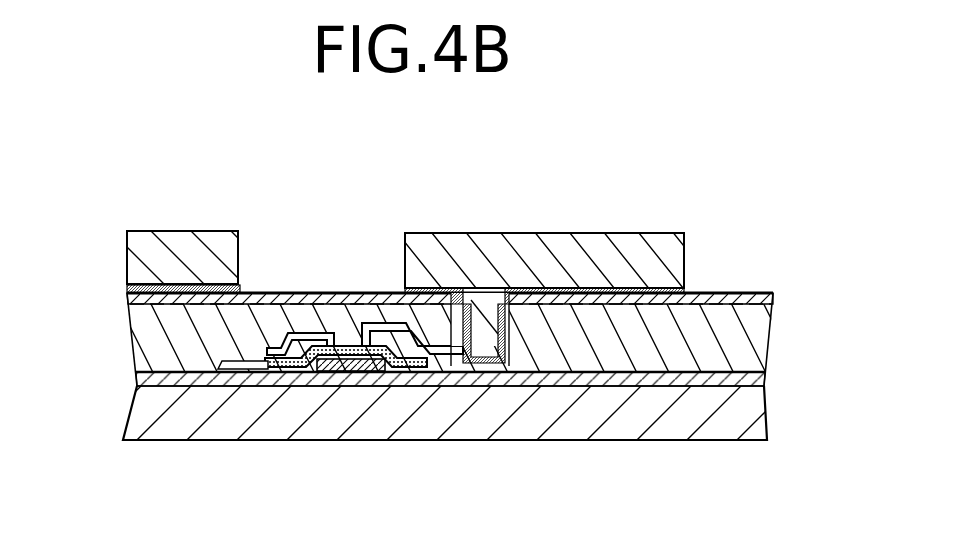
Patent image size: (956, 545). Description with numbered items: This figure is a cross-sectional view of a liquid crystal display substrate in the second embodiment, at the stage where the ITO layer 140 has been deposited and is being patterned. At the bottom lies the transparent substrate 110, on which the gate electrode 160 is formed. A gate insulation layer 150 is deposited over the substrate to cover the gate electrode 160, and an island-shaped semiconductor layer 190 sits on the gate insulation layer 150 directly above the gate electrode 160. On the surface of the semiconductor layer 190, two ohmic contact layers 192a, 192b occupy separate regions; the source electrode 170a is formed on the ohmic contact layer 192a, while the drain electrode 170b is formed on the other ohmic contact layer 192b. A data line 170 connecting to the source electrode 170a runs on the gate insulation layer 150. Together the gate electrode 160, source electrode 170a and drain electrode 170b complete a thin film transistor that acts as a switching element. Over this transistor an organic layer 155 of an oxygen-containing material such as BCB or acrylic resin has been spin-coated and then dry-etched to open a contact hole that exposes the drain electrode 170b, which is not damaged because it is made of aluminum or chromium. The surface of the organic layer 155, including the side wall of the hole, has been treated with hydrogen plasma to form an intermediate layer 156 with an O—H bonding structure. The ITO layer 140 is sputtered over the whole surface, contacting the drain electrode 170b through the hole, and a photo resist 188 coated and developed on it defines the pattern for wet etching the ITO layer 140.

The transparent substrate 110 is at (745, 441).
The gate insulation layer 150 is at (601, 381).
The organic layer 155 is at (683, 366).
The semiconductor layer 190 is at (332, 300).
The ITO layer 140 is at (686, 289).
The photo resist 188 is at (622, 246).
The intermediate layer 156 is at (170, 284).
The gate electrode 160 is at (380, 364).
The ohmic contact layer 192a is at (268, 370).
The ohmic contact layer 192b is at (412, 368).
The data line 170 is at (222, 364).
The source electrode 170a is at (289, 328).
The drain electrode 170b is at (404, 320).